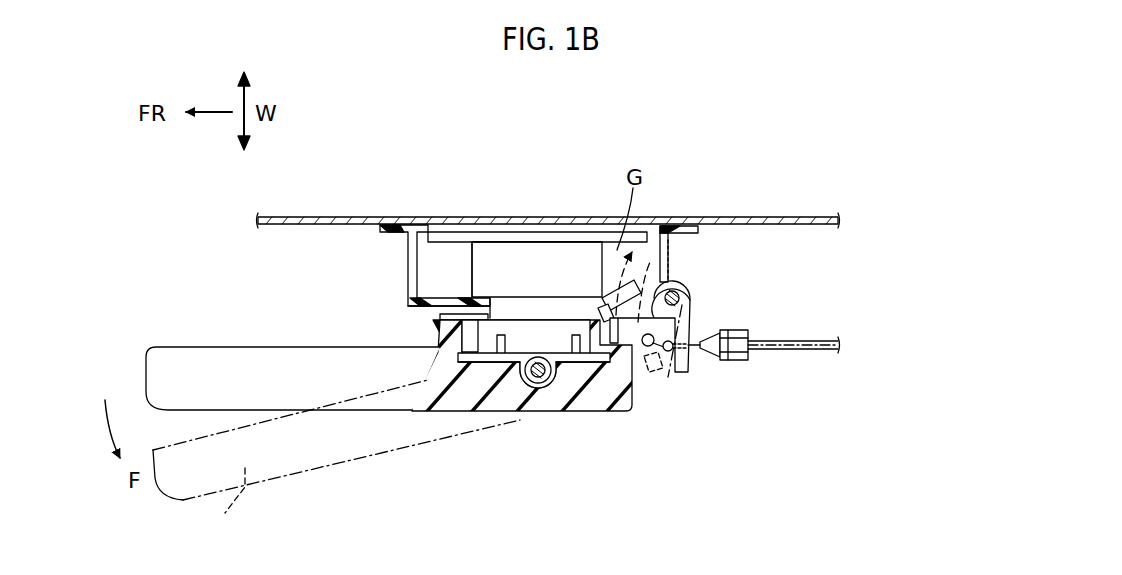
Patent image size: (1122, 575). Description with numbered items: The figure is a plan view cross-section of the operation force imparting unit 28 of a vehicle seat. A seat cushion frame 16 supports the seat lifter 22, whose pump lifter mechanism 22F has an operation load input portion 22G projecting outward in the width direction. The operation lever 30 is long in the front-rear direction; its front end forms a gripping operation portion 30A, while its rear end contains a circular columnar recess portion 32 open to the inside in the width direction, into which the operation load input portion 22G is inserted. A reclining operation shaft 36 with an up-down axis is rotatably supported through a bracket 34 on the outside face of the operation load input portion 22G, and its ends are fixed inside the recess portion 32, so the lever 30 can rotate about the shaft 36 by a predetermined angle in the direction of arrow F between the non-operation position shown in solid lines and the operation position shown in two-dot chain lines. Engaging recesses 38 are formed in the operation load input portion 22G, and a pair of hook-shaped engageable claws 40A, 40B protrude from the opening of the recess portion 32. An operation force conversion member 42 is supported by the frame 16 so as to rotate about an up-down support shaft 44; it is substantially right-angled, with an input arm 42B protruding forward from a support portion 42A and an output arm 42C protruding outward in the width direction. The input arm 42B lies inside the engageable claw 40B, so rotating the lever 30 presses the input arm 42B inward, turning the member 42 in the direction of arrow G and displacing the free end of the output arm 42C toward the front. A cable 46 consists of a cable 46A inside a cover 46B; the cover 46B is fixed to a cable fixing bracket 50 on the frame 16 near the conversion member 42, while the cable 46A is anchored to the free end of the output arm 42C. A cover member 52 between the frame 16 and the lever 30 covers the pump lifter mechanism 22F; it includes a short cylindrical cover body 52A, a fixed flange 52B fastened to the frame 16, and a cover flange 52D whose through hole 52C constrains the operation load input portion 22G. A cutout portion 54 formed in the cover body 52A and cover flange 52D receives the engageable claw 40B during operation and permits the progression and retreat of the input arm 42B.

The seat cushion frame 16 is at (296, 215).
The seat lifter 22 is at (636, 238).
The pump lifter mechanism 22F is at (558, 272).
The operation load input portion 22G is at (522, 298).
The operation force imparting unit 28 is at (377, 480).
The operation lever 30 is at (320, 414).
The operation portion 30A is at (190, 398).
The recess portion 32 is at (472, 415).
The bracket 34 is at (525, 388).
The reclining operation shaft 36 is at (540, 386).
The engaging recess 38 is at (485, 335).
The engageable claw 40A is at (438, 333).
The engageable claw 40B is at (592, 322).
The operation force conversion member 42 is at (692, 317).
The support portion 42A is at (692, 302).
The input arm 42B is at (690, 231).
The output arm 42C is at (660, 372).
The support shaft 44 is at (684, 292).
The cable 46 is at (802, 352).
The cable 46A is at (700, 350).
The cover 46B is at (815, 343).
The cable fixing bracket 50 is at (738, 360).
The cover member 52 is at (416, 256).
The cover body 52A is at (468, 282).
The fixed flange 52B is at (396, 224).
The through hole 52C is at (486, 297).
The cover flange 52D is at (410, 302).
The cutout portion 54 is at (728, 272).